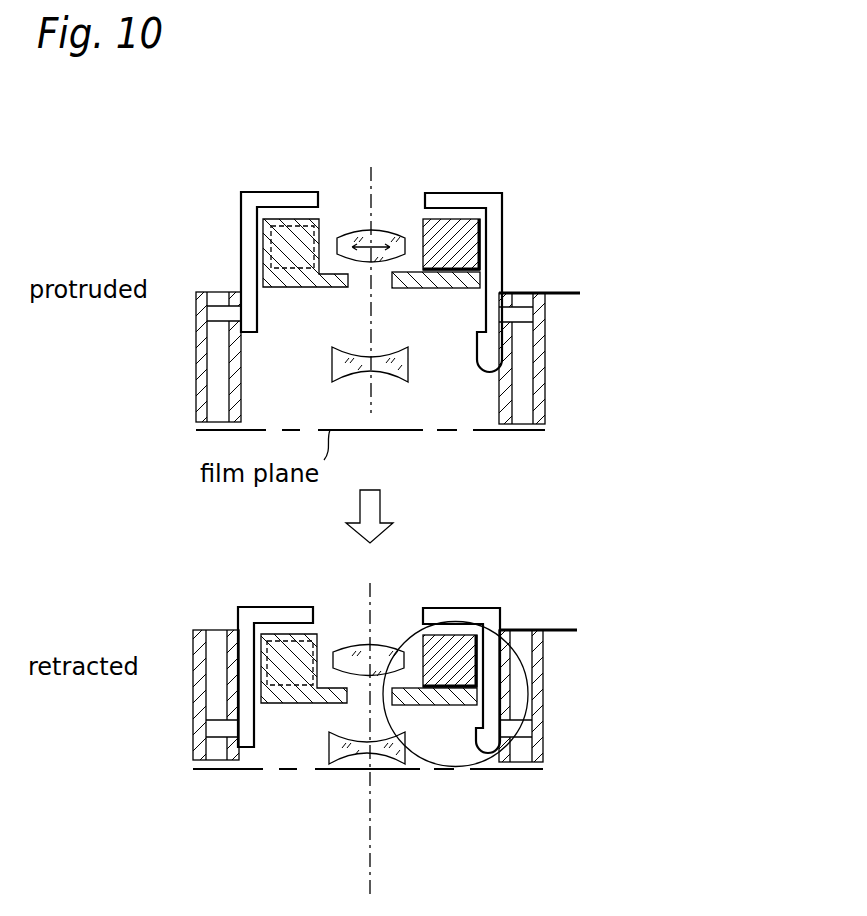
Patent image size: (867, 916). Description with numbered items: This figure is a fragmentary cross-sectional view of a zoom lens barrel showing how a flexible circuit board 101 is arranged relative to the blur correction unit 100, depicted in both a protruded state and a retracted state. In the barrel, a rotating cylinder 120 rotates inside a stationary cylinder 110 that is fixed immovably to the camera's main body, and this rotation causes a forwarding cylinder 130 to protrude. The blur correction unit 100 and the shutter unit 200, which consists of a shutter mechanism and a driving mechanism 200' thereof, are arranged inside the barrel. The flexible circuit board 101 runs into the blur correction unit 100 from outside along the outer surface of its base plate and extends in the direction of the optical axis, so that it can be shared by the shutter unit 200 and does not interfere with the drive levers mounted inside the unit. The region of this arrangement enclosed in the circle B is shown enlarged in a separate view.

The blur correction unit 100 is at (450, 230).
The flexible circuit board 101 is at (562, 297).
The stationary cylinder 110 is at (544, 385).
The rotating cylinder 120 is at (505, 430).
The forwarding cylinder 130 is at (485, 200).
The shutter unit 200 is at (355, 521).
The driving mechanism 200' is at (220, 460).
The circle B is at (402, 645).